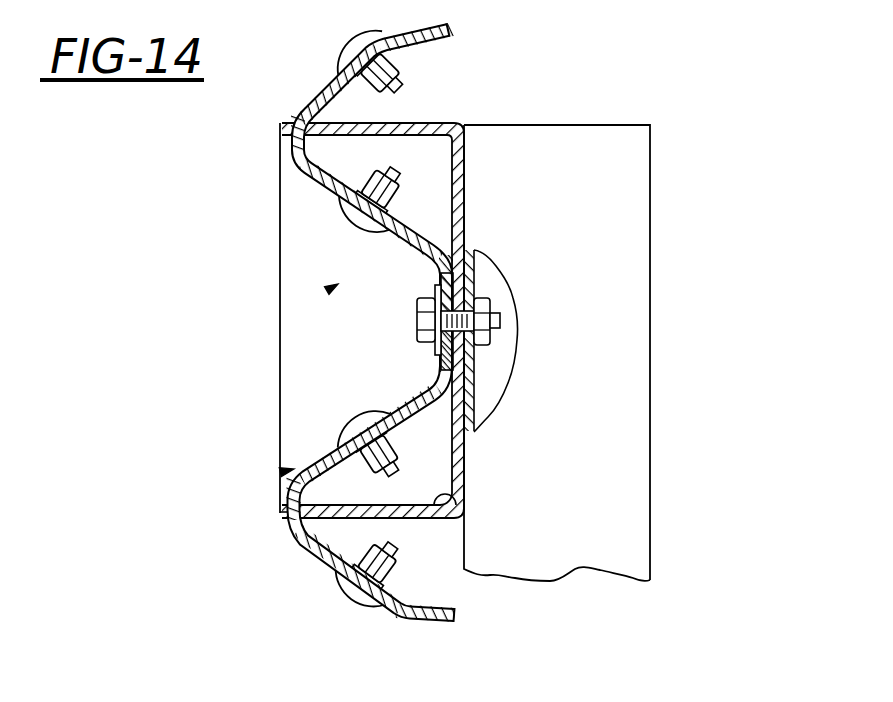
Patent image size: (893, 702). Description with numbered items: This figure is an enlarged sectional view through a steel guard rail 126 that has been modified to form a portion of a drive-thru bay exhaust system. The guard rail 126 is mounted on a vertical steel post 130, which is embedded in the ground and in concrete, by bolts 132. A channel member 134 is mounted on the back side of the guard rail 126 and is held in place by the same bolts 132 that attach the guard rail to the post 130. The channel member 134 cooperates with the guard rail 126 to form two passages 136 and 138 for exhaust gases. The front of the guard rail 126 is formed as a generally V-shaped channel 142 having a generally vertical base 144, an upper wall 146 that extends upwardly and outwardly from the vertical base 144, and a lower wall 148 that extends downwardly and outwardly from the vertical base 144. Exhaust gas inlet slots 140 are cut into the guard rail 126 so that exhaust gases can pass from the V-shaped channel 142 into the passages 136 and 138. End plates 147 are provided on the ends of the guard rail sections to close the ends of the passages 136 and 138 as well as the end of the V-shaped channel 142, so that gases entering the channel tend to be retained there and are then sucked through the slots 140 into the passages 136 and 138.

The steel guard rail 126 is at (296, 537).
The vertical steel post 130 is at (651, 415).
The bolt 132 is at (420, 328).
The channel member 134 is at (428, 123).
The passage 136 is at (452, 170).
The passage 138 is at (455, 501).
The exhaust gas inlet slot 140 is at (412, 243).
The V-shaped channel 142 is at (327, 291).
The vertical base 144 is at (418, 360).
The upper wall 146 is at (333, 182).
The end plate 147 is at (281, 472).
The lower wall 148 is at (280, 164).